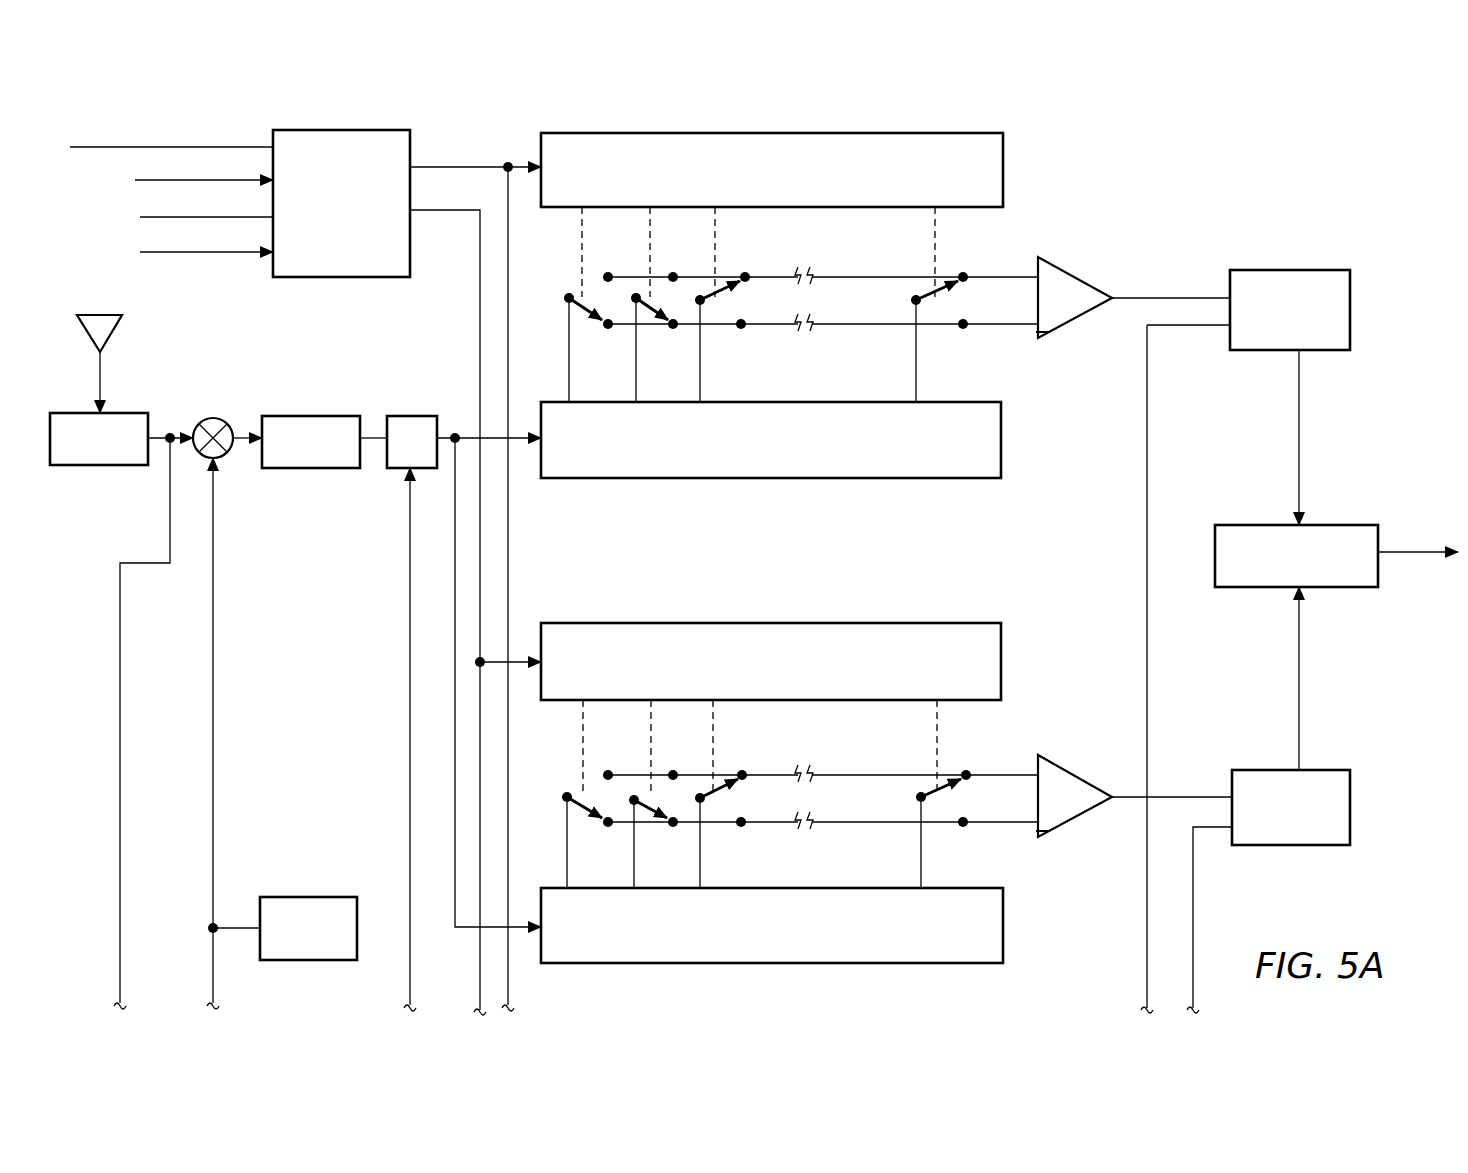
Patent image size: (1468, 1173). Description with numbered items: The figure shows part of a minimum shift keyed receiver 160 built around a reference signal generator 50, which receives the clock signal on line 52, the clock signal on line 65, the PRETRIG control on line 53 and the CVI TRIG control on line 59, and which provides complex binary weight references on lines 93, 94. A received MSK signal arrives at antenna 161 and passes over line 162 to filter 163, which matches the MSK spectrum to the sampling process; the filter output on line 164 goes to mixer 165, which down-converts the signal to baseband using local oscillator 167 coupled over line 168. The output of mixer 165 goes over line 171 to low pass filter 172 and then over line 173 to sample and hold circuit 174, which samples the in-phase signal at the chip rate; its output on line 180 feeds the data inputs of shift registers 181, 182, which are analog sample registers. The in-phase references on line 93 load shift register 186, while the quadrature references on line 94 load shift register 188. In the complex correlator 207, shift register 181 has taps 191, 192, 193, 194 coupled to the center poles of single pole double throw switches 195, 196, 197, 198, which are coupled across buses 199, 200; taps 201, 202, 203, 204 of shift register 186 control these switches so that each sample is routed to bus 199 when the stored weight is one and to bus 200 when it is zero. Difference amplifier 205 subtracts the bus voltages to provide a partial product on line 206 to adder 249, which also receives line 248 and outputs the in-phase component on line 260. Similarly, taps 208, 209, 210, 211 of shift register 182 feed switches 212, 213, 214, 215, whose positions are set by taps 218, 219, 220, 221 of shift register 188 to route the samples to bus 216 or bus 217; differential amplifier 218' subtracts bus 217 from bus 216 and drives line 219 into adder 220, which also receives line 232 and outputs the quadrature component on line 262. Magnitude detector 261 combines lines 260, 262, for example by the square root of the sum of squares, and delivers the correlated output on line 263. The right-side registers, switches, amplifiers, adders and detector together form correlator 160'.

The reference signal generator 50 is at (410, 130).
The line 52 is at (203, 143).
The line 65 is at (212, 166).
The line 53 is at (213, 202).
The line 59 is at (222, 250).
The line 93 is at (512, 576).
The line 94 is at (480, 326).
The complex correlator 207 is at (795, 115).
The shift register 186 is at (943, 133).
The tap 201 is at (583, 232).
The tap 202 is at (651, 232).
The tap 203 is at (716, 232).
The tap 204 is at (936, 232).
The bus 199 is at (857, 275).
The bus 200 is at (879, 325).
The single pole double throw switch 195 is at (597, 318).
The single pole double throw switch 196 is at (664, 318).
The single pole double throw switch 197 is at (723, 286).
The single pole double throw switch 198 is at (943, 286).
The tap 191 is at (570, 386).
The tap 192 is at (637, 386).
The tap 193 is at (701, 386).
The tap 194 is at (917, 390).
The difference amplifier 205 is at (1068, 270).
The line 206 is at (1149, 296).
The adder 249 is at (1272, 270).
The line 260 is at (1300, 402).
The line 248 is at (1145, 525).
The shift register 181 is at (948, 480).
The minimum shift keyed receiver 160 is at (313, 330).
The antenna 161 is at (115, 331).
The line 162 is at (100, 371).
The filter 163 is at (97, 466).
The line 164 is at (162, 428).
The mixer 165 is at (217, 418).
The line 171 is at (243, 445).
The low pass filter 172 is at (312, 404).
The line 173 is at (373, 445).
The sample and hold circuit 174 is at (420, 404).
The line 180 is at (450, 536).
The line 168 is at (214, 578).
The local oscillator 167 is at (300, 897).
The correlator 160' is at (772, 570).
The shift register 188 is at (913, 623).
The tap 218 is at (612, 746).
The tap; line 219 is at (652, 738).
The tap; adder 220 is at (714, 738).
The tap 221 is at (938, 738).
The bus 216 is at (850, 775).
The bus 217 is at (875, 823).
The single pole double throw switch 212 is at (590, 818).
The single pole double throw switch 213 is at (656, 818).
The single pole double throw switch 214 is at (722, 790).
The single pole double throw switch 215 is at (947, 790).
The tap 208 is at (568, 870).
The tap 209 is at (635, 870).
The tap 210 is at (701, 870).
The tap 211 is at (923, 868).
The differential amplifier 218' is at (1075, 780).
The line 262 is at (1300, 752).
The line 232 is at (1195, 886).
The shift register 182 is at (1005, 905).
The magnitude detector 261 is at (1347, 525).
The line 263 is at (1400, 551).